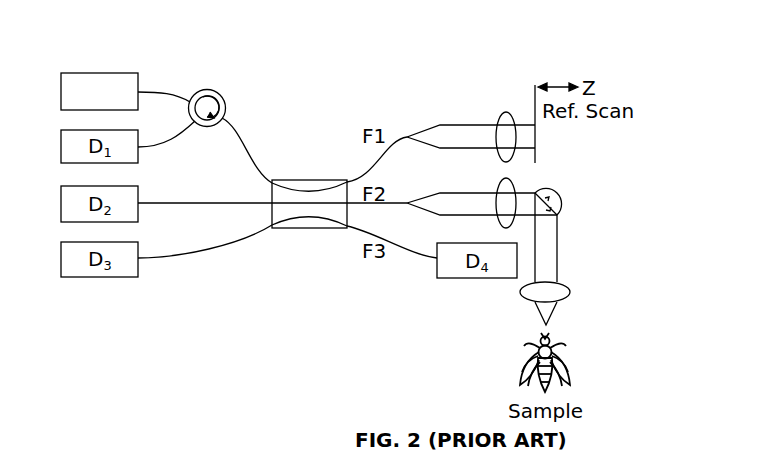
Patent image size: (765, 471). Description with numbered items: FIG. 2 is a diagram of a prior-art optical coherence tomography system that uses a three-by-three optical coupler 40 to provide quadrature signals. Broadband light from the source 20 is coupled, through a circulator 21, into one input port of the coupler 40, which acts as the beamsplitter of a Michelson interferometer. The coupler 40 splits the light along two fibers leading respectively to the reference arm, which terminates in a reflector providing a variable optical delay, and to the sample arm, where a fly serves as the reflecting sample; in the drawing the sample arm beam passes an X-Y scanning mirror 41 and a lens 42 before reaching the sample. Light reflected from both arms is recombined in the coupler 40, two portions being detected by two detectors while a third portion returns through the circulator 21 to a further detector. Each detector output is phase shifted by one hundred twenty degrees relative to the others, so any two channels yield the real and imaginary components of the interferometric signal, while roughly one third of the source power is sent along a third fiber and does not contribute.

The source 20 is at (100, 73).
The circulator 21 is at (226, 100).
The 3×3 optical coupler 40 is at (302, 228).
The X-Y scanning mirror 41 is at (560, 216).
The objective lens 42 is at (570, 292).